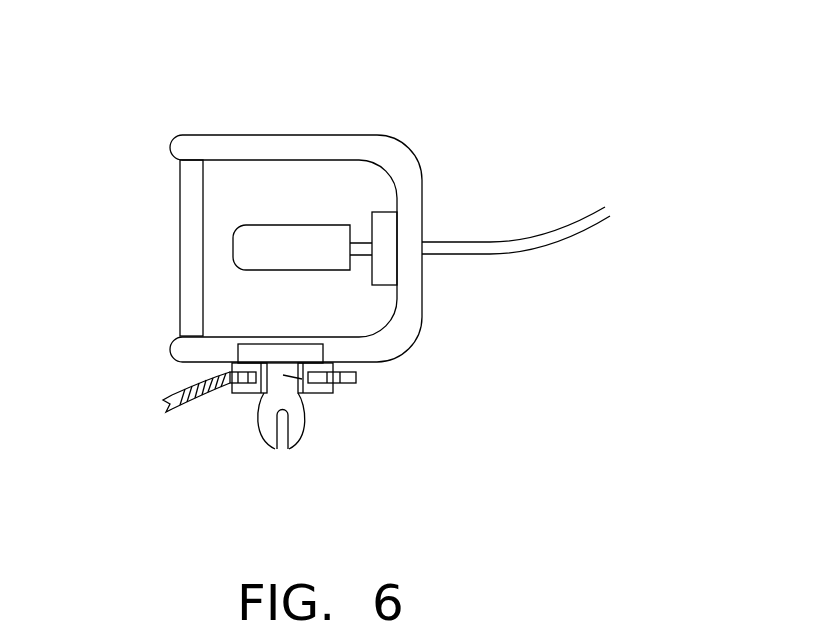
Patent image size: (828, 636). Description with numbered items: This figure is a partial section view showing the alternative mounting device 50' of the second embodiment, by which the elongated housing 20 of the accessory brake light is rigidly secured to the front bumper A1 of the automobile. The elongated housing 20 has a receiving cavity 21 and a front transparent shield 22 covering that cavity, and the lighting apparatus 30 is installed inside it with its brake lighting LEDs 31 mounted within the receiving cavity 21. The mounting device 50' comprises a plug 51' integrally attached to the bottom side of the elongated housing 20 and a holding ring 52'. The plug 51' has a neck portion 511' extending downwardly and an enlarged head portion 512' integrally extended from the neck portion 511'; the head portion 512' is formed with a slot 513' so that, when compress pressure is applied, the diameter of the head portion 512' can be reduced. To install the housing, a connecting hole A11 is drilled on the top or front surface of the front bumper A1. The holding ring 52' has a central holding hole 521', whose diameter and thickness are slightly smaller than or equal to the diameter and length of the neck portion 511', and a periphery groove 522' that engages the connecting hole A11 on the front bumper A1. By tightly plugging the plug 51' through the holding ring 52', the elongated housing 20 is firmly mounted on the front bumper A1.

The elongated housing 20 is at (322, 128).
The receiving cavity 21 is at (328, 212).
The front transparent shield 22 is at (193, 213).
The lighting apparatus 30 is at (212, 161).
The brake lighting LEDs 31 is at (253, 238).
The mounting device 50' is at (266, 413).
The plug 51' is at (360, 324).
The neck portion 511' is at (387, 383).
The head portion 512' is at (317, 463).
The slot 513' is at (260, 484).
The holding ring 52' is at (207, 423).
The central holding hole 521' is at (209, 444).
The periphery groove 522' is at (403, 360).
The front bumper A1 is at (167, 398).
The connecting hole A11 is at (233, 375).